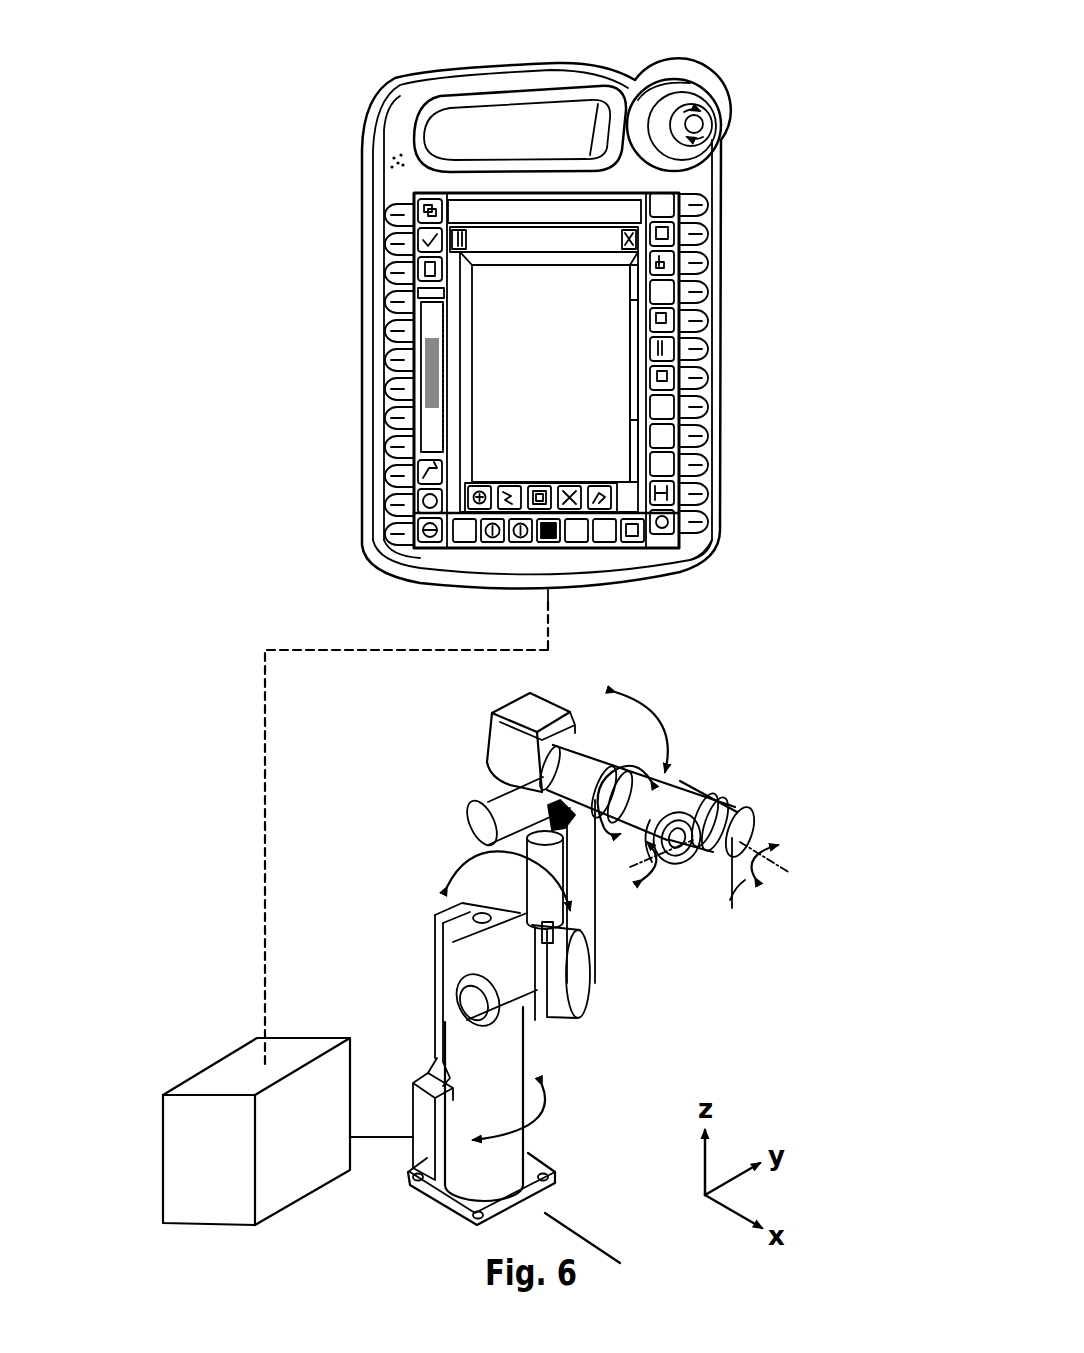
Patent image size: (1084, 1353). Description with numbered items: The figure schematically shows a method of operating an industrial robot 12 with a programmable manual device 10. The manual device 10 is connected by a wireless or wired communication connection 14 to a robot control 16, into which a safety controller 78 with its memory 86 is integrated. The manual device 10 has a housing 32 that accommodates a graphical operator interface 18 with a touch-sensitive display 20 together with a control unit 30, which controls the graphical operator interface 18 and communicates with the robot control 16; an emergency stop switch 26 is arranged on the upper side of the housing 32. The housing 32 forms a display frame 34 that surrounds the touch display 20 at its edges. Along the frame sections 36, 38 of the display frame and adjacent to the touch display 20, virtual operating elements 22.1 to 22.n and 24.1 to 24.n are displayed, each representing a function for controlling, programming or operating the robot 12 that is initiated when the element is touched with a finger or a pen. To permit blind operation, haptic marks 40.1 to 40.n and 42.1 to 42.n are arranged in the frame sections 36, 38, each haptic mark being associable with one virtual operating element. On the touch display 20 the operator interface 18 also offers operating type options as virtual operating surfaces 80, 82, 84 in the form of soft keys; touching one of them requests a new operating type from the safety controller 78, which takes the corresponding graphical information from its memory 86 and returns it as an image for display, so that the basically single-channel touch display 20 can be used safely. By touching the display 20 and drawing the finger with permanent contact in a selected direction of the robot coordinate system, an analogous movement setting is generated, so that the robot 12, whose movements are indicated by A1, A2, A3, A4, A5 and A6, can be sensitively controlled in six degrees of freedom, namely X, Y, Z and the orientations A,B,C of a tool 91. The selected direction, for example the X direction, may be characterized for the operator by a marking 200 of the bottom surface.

The programmable manual device 10 is at (423, 65).
The housing 32 is at (397, 135).
The emergency stop switch 26 is at (712, 123).
The virtual operating element 24.1 is at (420, 210).
The virtual operating element 24.n is at (420, 530).
The haptic mark 42.1 is at (395, 226).
The haptic mark 42.n is at (396, 541).
The virtual operating element 22.1 is at (662, 203).
The virtual operating element 22.n is at (680, 515).
The haptic mark 40.1 is at (686, 209).
The haptic mark 40.n is at (688, 528).
The graphical operator interface 18 is at (563, 306).
The touch-sensitive display 20 is at (563, 401).
The frame section 38 is at (448, 380).
The frame section 36 is at (638, 380).
The virtual operating surface 80 is at (480, 488).
The virtual operating surface 82 is at (512, 488).
The virtual operating surface 84 is at (544, 488).
The display frame 34 is at (700, 564).
The control unit 30 is at (578, 608).
The communication connection 14 is at (264, 772).
The industrial robot 12 is at (392, 754).
The robot control 16 is at (217, 1080).
The safety controller 78 is at (300, 1050).
The memory 86 is at (340, 1082).
The tool 91 is at (727, 895).
The marking 200 is at (585, 1240).
The robot axis 1 A1 is at (530, 1112).
The robot axis 2 A2 is at (495, 871).
The robot axis 3 A3 is at (645, 726).
The robot axis 4 A4 is at (625, 789).
The robot axis 5 A5 is at (661, 879).
The robot axis 6 A6 is at (768, 843).
The tool orientations A,B,C is at (748, 897).